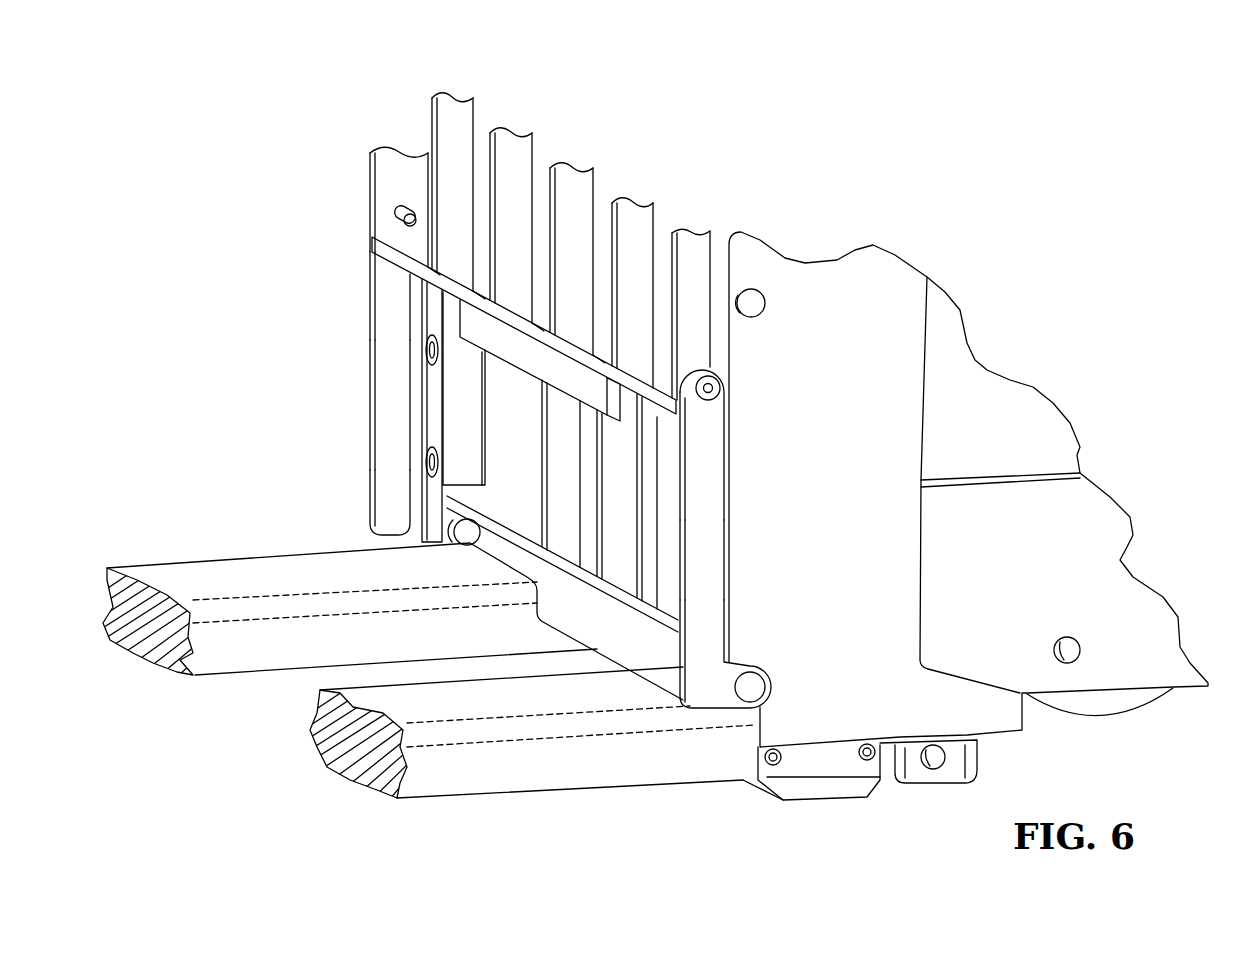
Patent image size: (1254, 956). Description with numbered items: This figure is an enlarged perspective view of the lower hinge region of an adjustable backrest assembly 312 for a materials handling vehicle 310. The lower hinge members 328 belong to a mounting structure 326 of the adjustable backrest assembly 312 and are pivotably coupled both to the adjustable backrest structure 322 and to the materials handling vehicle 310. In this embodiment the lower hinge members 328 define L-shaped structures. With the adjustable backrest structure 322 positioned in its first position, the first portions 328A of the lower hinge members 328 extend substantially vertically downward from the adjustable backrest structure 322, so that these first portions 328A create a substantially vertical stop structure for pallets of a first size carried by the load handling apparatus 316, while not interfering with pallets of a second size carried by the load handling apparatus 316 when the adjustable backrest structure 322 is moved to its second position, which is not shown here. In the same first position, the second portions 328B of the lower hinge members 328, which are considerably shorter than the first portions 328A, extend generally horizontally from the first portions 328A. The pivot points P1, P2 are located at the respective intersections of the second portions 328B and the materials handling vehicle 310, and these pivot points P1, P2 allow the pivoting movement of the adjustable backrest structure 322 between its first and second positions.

The materials handling vehicle 310 is at (1083, 548).
The adjustable backrest assembly 312 is at (347, 153).
The load handling apparatus 316 is at (473, 803).
The adjustable backrest structure 322 is at (697, 257).
The mounting structure 326 is at (365, 486).
The lower hinge members 328 is at (385, 418).
The first portions of the lower hinge members 328A is at (387, 310).
The second portions of the lower hinge members 328B is at (418, 509).
The pivot point P1 is at (755, 688).
The pivot point P2 is at (467, 534).